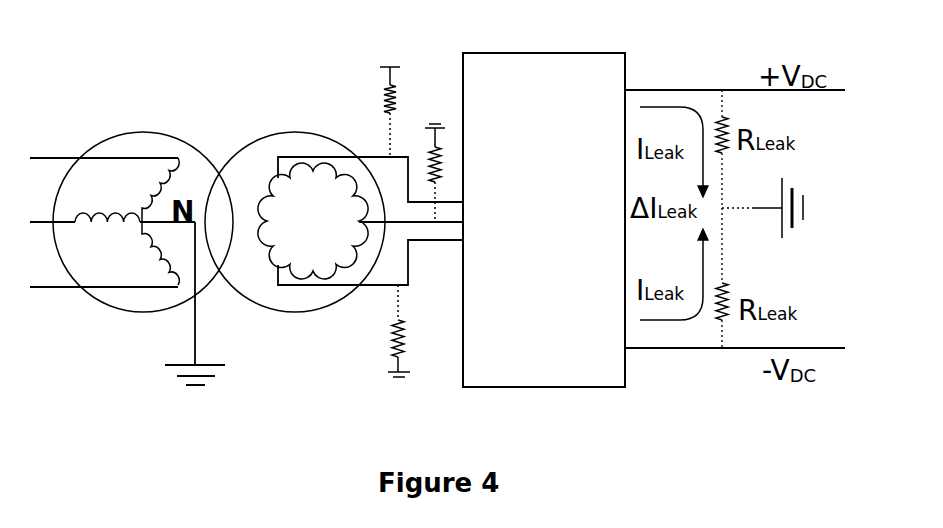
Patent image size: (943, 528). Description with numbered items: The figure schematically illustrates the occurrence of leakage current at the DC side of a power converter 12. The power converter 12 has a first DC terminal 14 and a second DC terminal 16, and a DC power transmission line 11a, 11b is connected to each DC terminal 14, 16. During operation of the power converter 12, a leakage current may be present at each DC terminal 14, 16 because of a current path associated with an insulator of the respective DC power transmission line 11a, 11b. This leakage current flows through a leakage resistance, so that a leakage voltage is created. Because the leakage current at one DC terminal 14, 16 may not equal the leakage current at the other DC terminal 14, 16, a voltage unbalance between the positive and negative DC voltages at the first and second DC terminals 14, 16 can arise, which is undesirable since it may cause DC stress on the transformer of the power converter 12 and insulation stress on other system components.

The power converter 12 is at (562, 232).
The first DC terminal 14 is at (627, 90).
The second DC terminal 16 is at (627, 348).
The DC power transmission line 11a is at (727, 90).
The DC power transmission line 11b is at (727, 348).